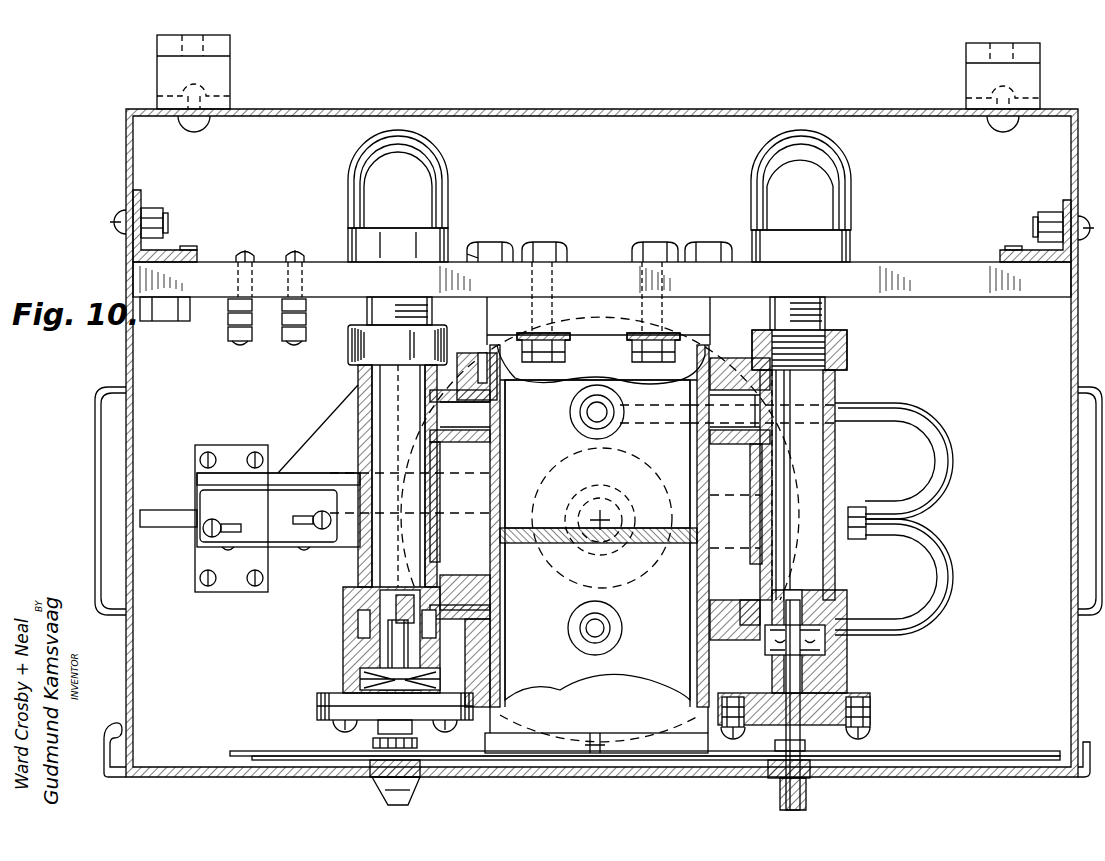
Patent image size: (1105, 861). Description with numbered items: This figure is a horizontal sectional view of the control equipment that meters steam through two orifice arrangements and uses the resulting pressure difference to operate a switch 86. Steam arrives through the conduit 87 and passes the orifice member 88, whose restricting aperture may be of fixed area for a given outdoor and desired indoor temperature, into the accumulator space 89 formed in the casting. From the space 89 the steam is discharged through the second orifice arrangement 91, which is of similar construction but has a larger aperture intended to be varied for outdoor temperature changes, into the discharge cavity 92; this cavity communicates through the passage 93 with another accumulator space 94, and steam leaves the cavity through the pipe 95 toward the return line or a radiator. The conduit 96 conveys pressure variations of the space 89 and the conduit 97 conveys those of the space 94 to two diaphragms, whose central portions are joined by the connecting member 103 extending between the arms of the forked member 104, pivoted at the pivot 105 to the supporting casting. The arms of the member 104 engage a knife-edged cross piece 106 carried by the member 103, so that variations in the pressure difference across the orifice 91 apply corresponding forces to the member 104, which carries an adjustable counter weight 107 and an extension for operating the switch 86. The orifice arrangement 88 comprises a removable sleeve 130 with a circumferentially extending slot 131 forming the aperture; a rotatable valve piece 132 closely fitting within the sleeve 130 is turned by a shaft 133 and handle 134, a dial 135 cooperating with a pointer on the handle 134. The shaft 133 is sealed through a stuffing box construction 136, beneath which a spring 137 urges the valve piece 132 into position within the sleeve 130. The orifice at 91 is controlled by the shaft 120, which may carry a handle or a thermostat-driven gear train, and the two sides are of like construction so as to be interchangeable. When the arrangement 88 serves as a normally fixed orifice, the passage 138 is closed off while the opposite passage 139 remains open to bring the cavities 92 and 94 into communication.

The switch 86 is at (278, 467).
The conduit 87 is at (438, 189).
The orifice member 88 is at (365, 627).
The accumulator space 89 is at (597, 621).
The orifice arrangement 91 is at (830, 640).
The discharge cavity 92 is at (792, 485).
The passage 93 is at (768, 407).
The accumulator space 94 is at (597, 454).
The pipe 95 is at (832, 207).
The conduit 96 is at (640, 605).
The conduit 97 is at (656, 345).
The diaphragm connecting member 103 is at (640, 490).
The forked member 104 is at (545, 500).
The pivot 105 is at (390, 520).
The knife-edged cross piece 106 is at (601, 508).
The adjustable counter weight 107 is at (232, 596).
The shaft 120 is at (848, 756).
The removable sleeve 130 is at (440, 545).
The circumferentially extending slot 131 is at (414, 628).
The rotatable valve piece 132 is at (386, 648).
The shaft 133 is at (388, 690).
The handle 134 is at (372, 780).
The dial 135 is at (295, 753).
The stuffing box construction 136 is at (318, 703).
The spring 137 is at (358, 676).
The passage 138 is at (500, 414).
The passage 139 is at (700, 432).